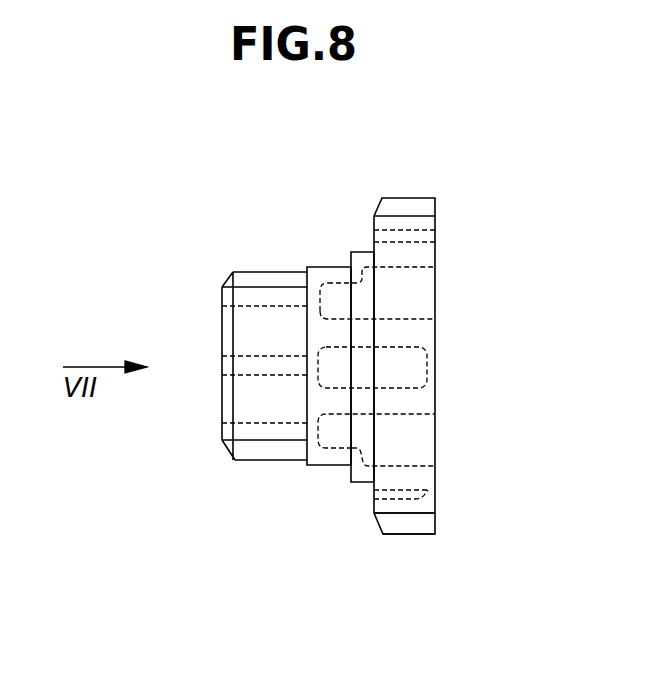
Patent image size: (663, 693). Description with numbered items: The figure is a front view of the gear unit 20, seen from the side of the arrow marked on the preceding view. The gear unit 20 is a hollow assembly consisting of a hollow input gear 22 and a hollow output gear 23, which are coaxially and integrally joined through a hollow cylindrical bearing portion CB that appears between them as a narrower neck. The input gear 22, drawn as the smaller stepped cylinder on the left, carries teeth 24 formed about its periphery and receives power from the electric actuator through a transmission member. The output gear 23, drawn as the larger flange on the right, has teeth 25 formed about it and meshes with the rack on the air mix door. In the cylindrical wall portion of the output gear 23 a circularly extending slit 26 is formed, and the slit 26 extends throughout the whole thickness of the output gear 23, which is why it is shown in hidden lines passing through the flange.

The gear unit 20 is at (194, 157).
The hollow input gear 22 is at (267, 461).
The hollow output gear 23 is at (408, 535).
The teeth 24 is at (270, 280).
The teeth 25 is at (403, 207).
The circularly extending slit 26 is at (435, 492).
The hollow cylindrical bearing portion CB is at (363, 252).